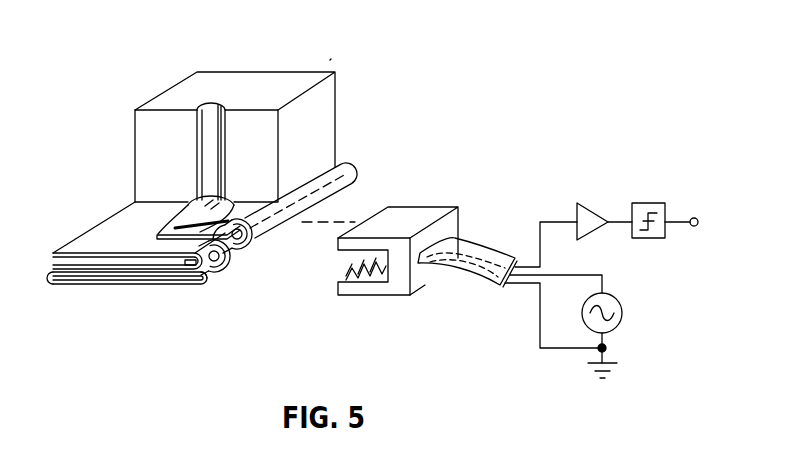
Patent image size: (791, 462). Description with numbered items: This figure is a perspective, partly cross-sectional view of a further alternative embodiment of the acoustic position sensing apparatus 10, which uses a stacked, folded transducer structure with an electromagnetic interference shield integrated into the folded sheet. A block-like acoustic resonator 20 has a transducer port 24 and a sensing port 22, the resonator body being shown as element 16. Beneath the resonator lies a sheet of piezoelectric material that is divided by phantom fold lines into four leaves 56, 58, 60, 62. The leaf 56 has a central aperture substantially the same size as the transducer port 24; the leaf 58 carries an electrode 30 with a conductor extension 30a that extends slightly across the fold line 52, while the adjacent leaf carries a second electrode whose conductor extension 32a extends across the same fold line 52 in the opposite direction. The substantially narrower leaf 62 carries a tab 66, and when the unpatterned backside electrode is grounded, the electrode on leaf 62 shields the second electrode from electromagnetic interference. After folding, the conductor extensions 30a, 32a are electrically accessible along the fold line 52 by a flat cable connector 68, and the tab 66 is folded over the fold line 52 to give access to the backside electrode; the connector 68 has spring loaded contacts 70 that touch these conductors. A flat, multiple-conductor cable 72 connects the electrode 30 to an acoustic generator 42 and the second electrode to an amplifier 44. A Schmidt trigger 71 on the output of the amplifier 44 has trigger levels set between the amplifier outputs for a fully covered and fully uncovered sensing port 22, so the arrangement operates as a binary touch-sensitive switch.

The acoustic position sensing apparatus 10 is at (363, 37).
The housing block 16 is at (259, 137).
The acoustic resonator 20 is at (152, 152).
The sensing port 22 is at (219, 116).
The transducer port 24 is at (162, 205).
The electrode 30 is at (151, 223).
The conductor extension 30a is at (246, 264).
The conductor extension 32a is at (262, 239).
The fold line 52 is at (321, 194).
The leaf 56 is at (125, 294).
The leaf 58 is at (139, 269).
The leaf 60 is at (130, 302).
The leaf 62 is at (120, 302).
The tab 66 is at (210, 272).
The flat cable connector 68 is at (428, 212).
The spring loaded contacts 70 is at (365, 284).
The flat multiple-conductor cable 72 is at (481, 243).
The acoustic generator 42 is at (583, 326).
The amplifier 44 is at (573, 220).
The Schmidt trigger 71 is at (651, 204).